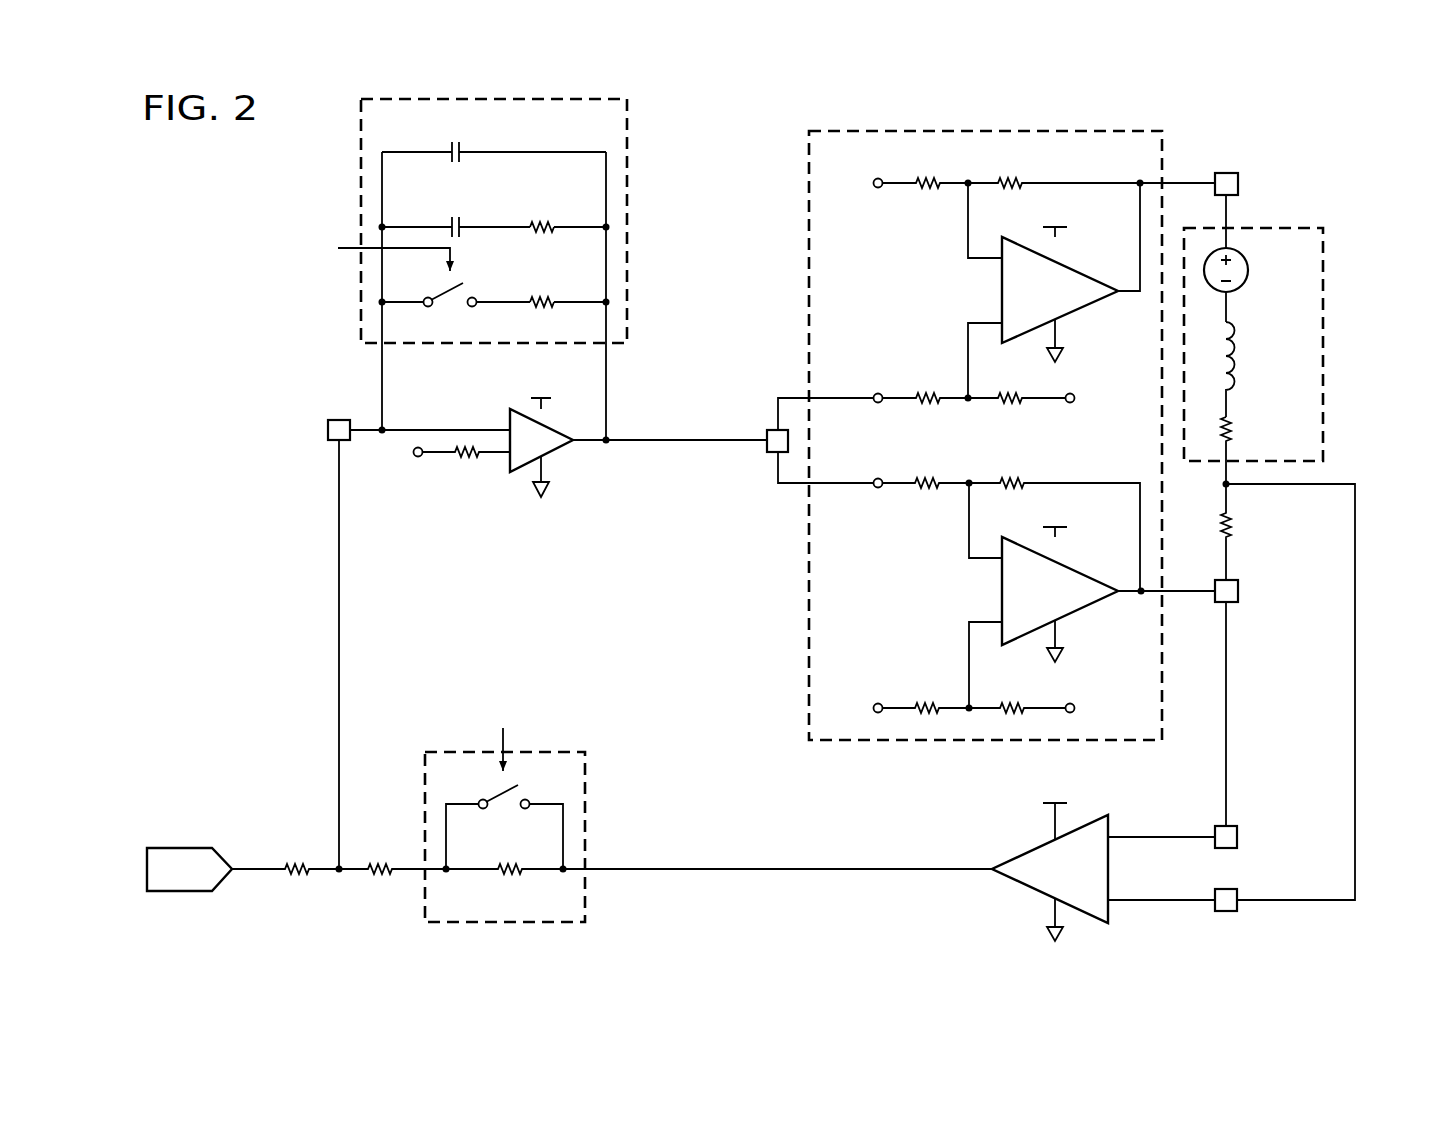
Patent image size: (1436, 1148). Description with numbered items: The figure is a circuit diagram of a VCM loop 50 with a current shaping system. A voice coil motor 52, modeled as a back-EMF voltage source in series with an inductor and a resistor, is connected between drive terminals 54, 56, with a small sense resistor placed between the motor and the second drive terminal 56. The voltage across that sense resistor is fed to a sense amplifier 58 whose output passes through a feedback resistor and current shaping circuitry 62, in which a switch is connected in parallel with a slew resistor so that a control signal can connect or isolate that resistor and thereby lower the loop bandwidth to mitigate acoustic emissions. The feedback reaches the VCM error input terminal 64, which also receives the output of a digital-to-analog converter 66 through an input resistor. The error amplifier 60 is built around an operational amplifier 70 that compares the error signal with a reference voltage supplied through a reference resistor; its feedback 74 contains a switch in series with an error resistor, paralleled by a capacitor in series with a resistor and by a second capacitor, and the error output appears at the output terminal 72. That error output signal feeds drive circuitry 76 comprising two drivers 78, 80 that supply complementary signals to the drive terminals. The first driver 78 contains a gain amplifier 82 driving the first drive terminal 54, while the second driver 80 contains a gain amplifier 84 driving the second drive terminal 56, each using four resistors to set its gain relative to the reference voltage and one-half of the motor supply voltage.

The VCM loop 50 is at (1378, 138).
The voice coil motor 52 is at (1333, 302).
The drive terminal 54 is at (1230, 173).
The drive terminal 56 is at (1230, 602).
The sense amplifier 58 is at (1030, 887).
The error amplifier 60 is at (653, 191).
The current shaping circuitry 62 is at (417, 893).
The VCM error input terminal 64 is at (333, 420).
The digital-to-analog converter 66 is at (180, 891).
The operational amplifier 70 is at (553, 455).
The output terminal 72 is at (770, 455).
The feedback 74 is at (355, 183).
The drive circuitry 76 is at (800, 578).
The driver 78 is at (930, 277).
The driver 80 is at (928, 584).
The gain amplifier 82 is at (1080, 310).
The gain amplifier 84 is at (1080, 612).